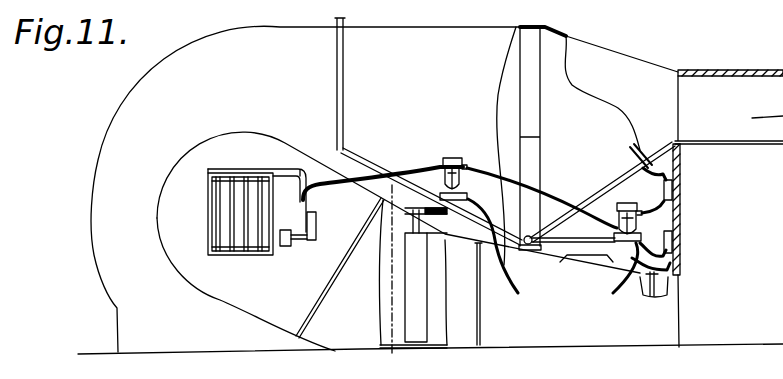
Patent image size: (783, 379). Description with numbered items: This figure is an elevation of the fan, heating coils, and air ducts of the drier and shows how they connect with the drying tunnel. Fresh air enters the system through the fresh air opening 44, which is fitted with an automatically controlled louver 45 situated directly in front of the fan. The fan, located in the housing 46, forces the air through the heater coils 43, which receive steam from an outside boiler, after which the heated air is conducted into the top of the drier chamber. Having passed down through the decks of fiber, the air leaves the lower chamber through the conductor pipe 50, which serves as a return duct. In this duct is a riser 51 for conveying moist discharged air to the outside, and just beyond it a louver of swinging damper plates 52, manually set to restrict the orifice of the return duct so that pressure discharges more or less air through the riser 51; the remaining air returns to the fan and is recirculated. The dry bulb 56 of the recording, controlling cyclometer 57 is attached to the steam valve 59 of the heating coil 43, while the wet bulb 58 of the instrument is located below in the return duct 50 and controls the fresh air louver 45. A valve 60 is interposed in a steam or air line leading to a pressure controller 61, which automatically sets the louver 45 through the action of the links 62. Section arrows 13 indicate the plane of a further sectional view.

The section line arrows 13 is at (392, 205).
The heater coils 43 is at (540, 117).
The fresh air opening 44 is at (233, 212).
The louver 45 is at (243, 243).
The housing 46 is at (140, 115).
The conductor pipe 50 is at (598, 331).
The riser 51 is at (597, 263).
The swinging damper plates 52 is at (418, 330).
The dry bulb 56 is at (632, 150).
The controlling cyclometer 57 is at (675, 189).
The wet bulb 58 is at (670, 290).
The steam valve 59 is at (618, 208).
The valve 60 is at (452, 157).
The pressure controller 61 is at (318, 247).
The links 62 is at (306, 180).